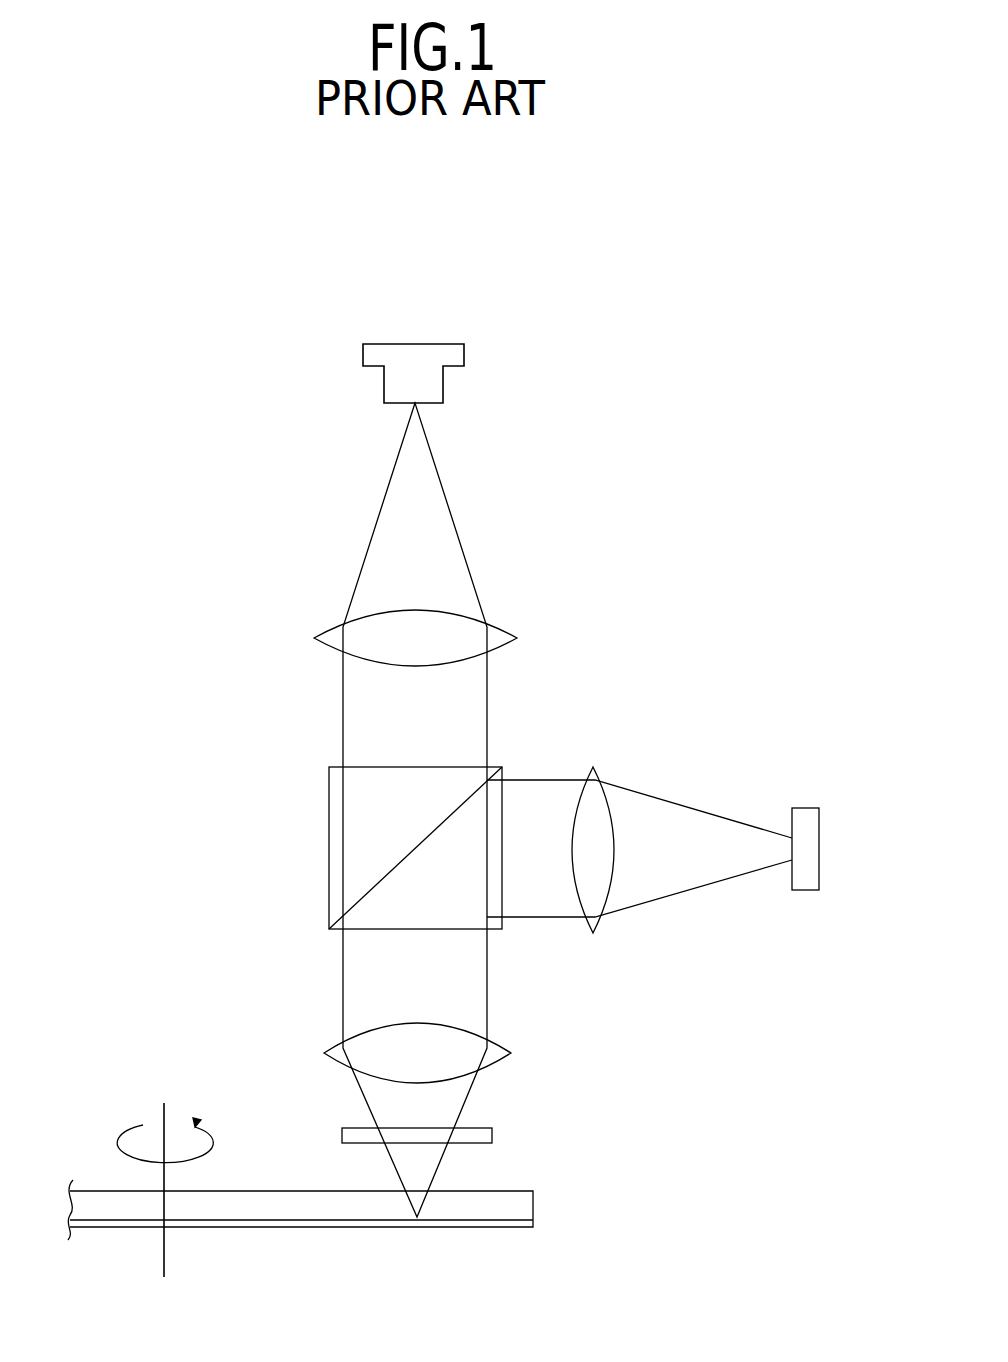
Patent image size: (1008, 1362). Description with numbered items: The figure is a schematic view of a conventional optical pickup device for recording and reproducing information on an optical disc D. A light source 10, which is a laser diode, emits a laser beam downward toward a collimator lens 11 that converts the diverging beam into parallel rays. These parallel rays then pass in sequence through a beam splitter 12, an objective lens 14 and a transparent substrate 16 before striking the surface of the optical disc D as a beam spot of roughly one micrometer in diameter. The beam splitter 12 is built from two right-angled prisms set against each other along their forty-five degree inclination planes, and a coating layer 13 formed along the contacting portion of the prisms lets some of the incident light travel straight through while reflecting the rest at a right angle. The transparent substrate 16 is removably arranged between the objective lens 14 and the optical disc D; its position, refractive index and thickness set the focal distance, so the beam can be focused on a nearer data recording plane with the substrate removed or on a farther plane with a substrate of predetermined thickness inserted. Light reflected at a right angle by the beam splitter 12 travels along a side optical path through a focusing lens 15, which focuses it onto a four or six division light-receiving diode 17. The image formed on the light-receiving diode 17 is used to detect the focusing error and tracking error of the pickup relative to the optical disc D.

The light source 10 is at (443, 388).
The collimator lens 11 is at (497, 637).
The beam splitter 12 is at (329, 792).
The coating layer 13 is at (393, 863).
The objective lens 14 is at (324, 1052).
The focusing lens 15 is at (593, 770).
The transparent substrate 16 is at (357, 1127).
The light-receiving diode 17 is at (808, 808).
The optical disc D is at (514, 1188).